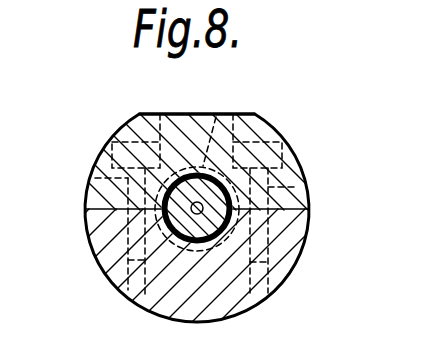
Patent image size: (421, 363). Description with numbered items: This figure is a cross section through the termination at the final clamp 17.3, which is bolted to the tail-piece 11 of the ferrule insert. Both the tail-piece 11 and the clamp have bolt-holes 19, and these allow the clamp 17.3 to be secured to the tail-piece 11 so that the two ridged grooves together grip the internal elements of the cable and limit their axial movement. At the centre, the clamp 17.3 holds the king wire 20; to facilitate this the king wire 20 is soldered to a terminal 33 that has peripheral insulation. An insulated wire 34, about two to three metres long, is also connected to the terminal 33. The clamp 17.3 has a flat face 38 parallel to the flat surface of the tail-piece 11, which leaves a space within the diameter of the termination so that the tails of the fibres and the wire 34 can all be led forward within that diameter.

The tail-piece 11 is at (227, 298).
The final clamp 17.3 is at (182, 113).
The bolt-holes 19 is at (90, 175).
The king wire 20 is at (163, 214).
The terminal 33 is at (233, 219).
The insulated wire 34 is at (223, 114).
The flat face 38 is at (204, 113).